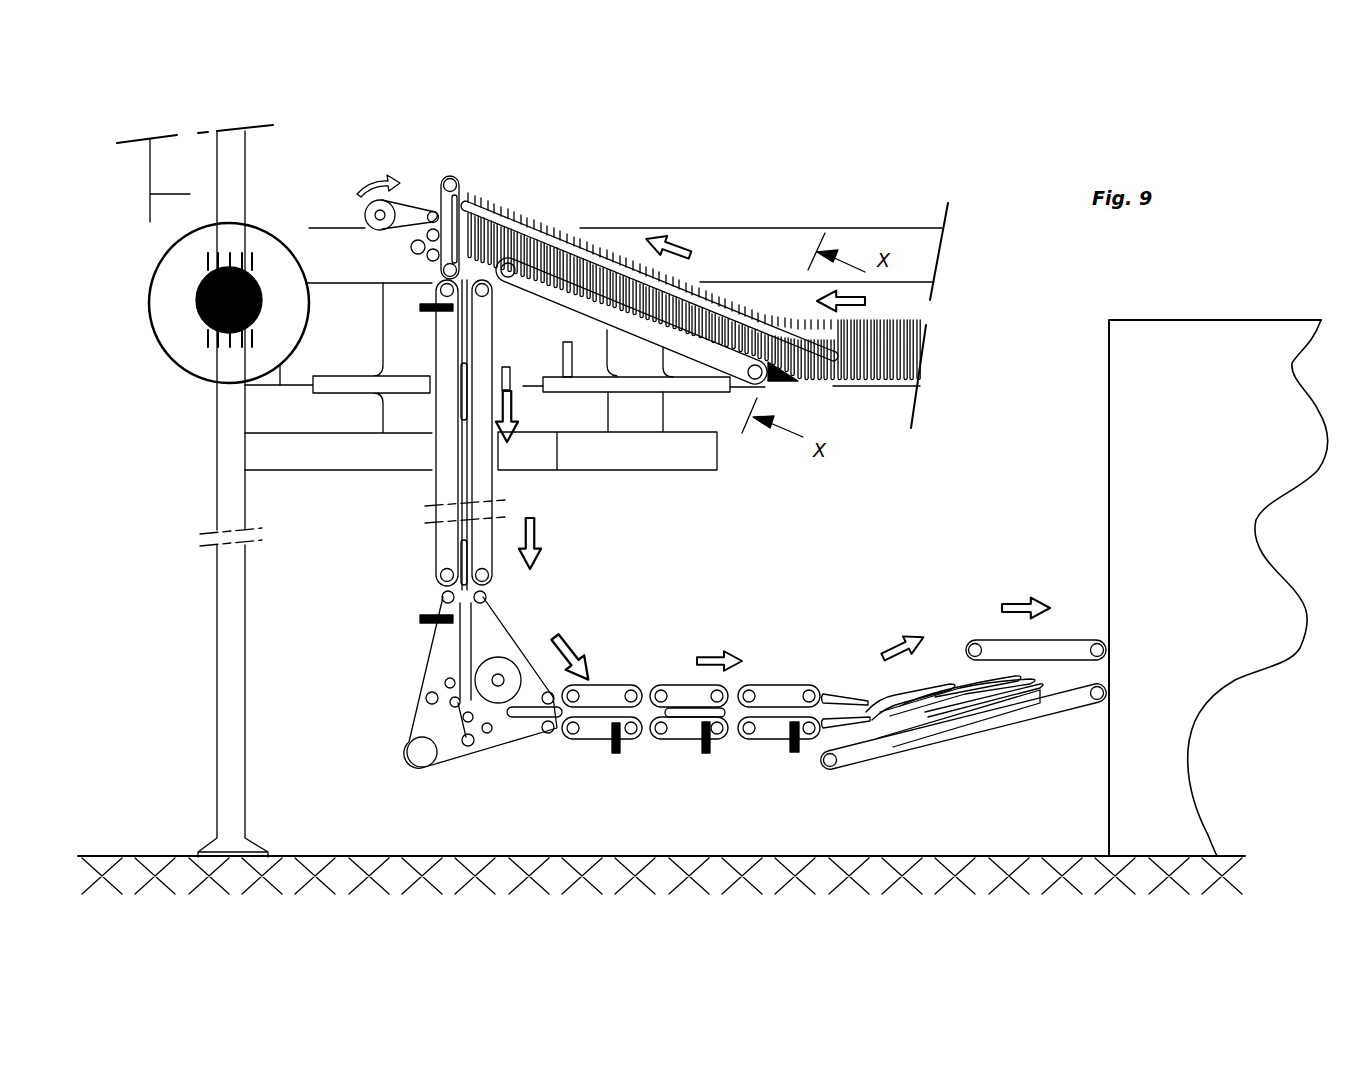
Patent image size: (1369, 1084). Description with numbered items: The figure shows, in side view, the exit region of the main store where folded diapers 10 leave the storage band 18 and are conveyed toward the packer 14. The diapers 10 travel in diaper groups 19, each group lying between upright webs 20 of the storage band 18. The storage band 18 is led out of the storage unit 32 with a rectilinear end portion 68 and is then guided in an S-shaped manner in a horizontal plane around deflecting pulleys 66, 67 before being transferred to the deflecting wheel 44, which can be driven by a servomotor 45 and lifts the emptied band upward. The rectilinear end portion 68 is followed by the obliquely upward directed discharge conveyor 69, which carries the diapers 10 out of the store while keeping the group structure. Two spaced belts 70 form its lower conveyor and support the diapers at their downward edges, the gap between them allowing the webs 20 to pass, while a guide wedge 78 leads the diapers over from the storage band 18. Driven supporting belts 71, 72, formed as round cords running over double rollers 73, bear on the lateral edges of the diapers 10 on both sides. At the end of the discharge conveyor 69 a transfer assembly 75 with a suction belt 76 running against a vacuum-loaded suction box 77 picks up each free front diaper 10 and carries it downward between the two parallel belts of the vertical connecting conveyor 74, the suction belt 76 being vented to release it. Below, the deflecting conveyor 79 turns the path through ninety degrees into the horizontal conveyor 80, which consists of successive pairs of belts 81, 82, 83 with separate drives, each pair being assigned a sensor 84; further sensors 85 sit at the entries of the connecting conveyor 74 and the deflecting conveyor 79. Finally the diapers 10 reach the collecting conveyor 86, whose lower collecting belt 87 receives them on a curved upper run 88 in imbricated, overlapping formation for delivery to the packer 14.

The diaper 10 is at (958, 658).
The packer 14 is at (1210, 340).
The storage band 18 is at (152, 163).
The diaper group 19 is at (735, 270).
The web 20 is at (167, 196).
The storage unit 32 is at (862, 203).
The deflecting wheel 44 is at (245, 240).
The servomotor 45 is at (195, 310).
The deflecting pulley 66 is at (345, 385).
The deflecting pulley 67 is at (705, 392).
The rectilinear end portion 68 is at (909, 307).
The discharge conveyor 69 is at (634, 212).
The belt 70 is at (635, 330).
The supporting belt 71 is at (540, 217).
The supporting belt 72 is at (485, 222).
The double roller 73 is at (487, 203).
The connecting conveyor 74 is at (425, 485).
The transfer assembly 75 is at (421, 186).
The suction belt 76 is at (462, 185).
The suction box 77 is at (447, 180).
The guide wedge 78 is at (778, 387).
The deflecting conveyor 79 is at (388, 707).
The horizontal conveyor 80 is at (741, 764).
The pair of belts 81 is at (591, 753).
The pair of belts 82 is at (674, 754).
The pair of belts 83 is at (781, 768).
The sensor 84 is at (617, 723).
The sensor 85 is at (420, 308).
The collecting conveyor 86 is at (963, 756).
The lower collecting belt 87 is at (1059, 731).
The upper run 88 is at (1073, 683).